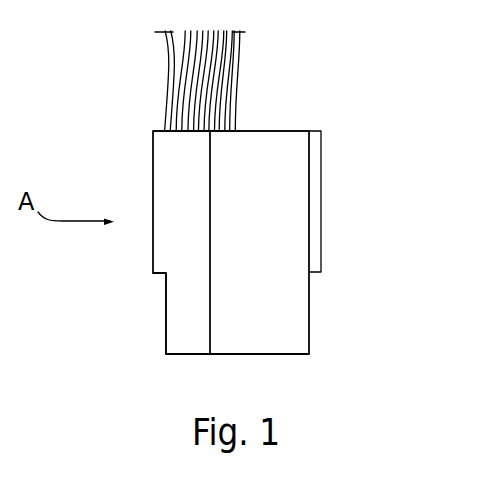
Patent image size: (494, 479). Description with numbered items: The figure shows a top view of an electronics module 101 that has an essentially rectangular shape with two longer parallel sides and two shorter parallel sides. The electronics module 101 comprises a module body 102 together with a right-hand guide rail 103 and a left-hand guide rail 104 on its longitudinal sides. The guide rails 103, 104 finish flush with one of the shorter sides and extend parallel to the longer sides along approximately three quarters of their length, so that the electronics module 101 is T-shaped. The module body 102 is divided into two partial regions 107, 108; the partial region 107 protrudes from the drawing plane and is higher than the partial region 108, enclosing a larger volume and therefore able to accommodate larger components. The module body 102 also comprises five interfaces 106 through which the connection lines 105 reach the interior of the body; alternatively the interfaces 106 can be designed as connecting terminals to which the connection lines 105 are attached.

The electronics module 101 is at (370, 96).
The module body 102 is at (285, 353).
The right-hand guide rail 103 is at (315, 222).
The left-hand guide rail 104 is at (160, 180).
The connection lines 105 is at (163, 46).
The interfaces 106 is at (154, 130).
The partial region 107 is at (292, 332).
The partial region 108 is at (167, 337).